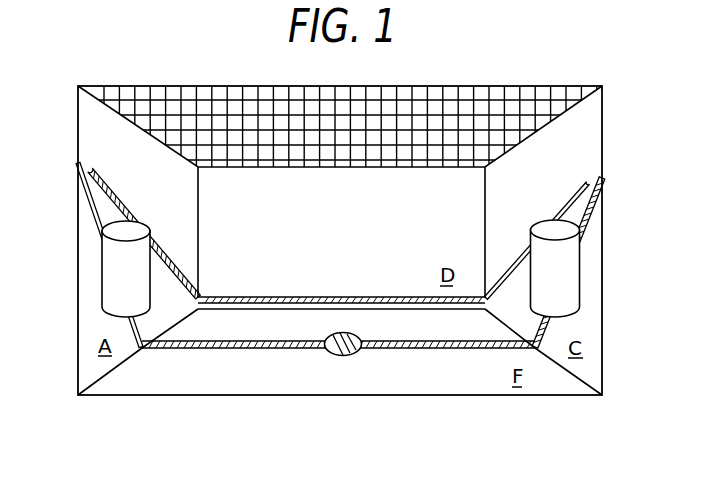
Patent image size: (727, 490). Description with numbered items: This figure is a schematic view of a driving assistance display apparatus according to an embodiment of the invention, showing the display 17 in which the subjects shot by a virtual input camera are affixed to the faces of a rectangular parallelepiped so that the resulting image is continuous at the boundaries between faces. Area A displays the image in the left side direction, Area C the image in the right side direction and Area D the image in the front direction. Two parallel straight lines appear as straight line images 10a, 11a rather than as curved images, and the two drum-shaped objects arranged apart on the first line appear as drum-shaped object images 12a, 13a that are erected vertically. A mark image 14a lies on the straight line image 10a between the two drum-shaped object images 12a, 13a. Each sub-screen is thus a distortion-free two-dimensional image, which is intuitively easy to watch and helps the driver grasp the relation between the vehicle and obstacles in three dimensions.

The housing / box 17 is at (603, 130).
The drum-shaped object image 13a is at (110, 280).
The drum-shaped object image 12a is at (570, 278).
The straight line image 11a is at (287, 296).
The straight line image 10a is at (213, 350).
The mark image 14a is at (347, 357).